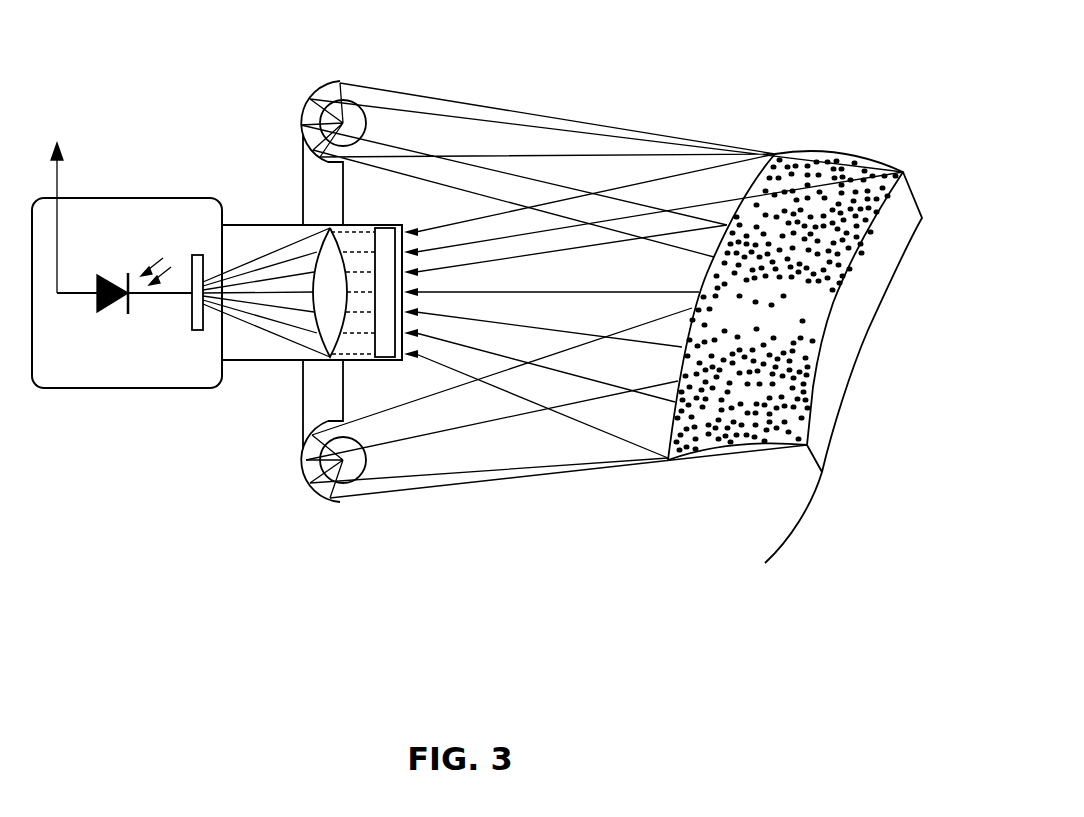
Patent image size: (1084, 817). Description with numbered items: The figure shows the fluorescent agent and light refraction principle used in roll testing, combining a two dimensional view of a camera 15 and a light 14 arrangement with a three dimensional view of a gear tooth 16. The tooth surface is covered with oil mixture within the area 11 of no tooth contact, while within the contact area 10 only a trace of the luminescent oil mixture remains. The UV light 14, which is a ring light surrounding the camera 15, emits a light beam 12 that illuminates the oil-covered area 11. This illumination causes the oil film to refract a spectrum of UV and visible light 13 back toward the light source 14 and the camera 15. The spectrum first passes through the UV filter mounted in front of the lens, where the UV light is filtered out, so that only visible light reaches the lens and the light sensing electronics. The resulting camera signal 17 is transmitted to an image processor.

The contact area 10 is at (772, 302).
The area of no tooth contact 11 is at (796, 150).
The light beam 12 is at (515, 520).
The refracted light spectrum 13 is at (462, 290).
The UV ring light 14 is at (315, 92).
The camera 15 is at (30, 386).
The gear tooth 16 is at (740, 507).
The camera signal 17 is at (78, 218).